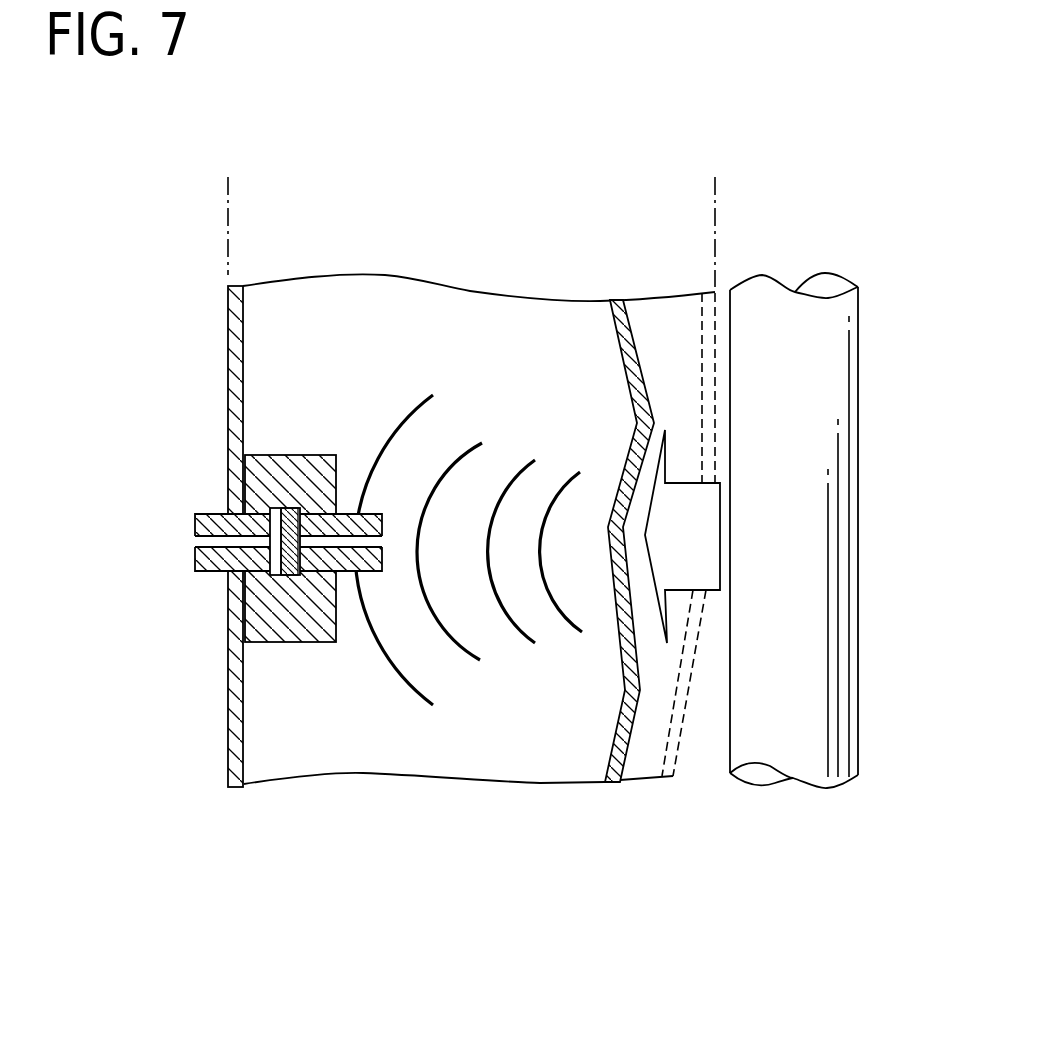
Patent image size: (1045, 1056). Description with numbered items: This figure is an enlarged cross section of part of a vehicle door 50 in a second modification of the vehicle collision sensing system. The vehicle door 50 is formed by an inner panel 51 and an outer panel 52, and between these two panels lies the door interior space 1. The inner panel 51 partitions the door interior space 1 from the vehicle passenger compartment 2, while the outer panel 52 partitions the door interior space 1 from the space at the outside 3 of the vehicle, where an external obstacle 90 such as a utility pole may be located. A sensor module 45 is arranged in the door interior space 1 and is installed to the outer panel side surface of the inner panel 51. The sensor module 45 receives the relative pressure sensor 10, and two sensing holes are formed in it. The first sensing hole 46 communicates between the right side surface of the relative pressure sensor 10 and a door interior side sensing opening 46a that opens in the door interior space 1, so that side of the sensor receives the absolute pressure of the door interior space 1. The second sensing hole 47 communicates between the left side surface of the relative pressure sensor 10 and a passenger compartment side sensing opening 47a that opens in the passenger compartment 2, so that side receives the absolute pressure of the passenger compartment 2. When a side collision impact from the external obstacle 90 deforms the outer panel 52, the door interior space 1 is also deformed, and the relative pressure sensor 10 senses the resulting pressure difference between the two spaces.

The door interior space 1 is at (470, 240).
The vehicle passenger compartment 2 is at (143, 245).
The outside of the vehicle 3 is at (802, 238).
The relative pressure sensor 10 is at (274, 548).
The sensor module 45 is at (287, 447).
The first sensing hole 46 is at (396, 626).
The door interior side sensing opening 46a is at (382, 545).
The second sensing hole 47 is at (191, 519).
The passenger compartment side sensing opening 47a is at (195, 541).
The vehicle door 50 is at (471, 593).
The inner panel 51 is at (240, 738).
The outer panel 52 is at (672, 743).
The external obstacle 90 is at (858, 477).